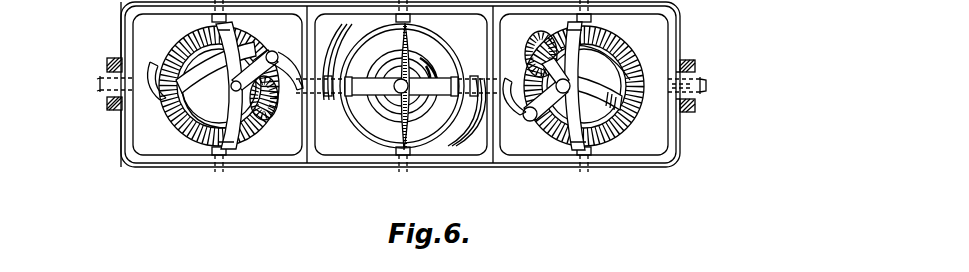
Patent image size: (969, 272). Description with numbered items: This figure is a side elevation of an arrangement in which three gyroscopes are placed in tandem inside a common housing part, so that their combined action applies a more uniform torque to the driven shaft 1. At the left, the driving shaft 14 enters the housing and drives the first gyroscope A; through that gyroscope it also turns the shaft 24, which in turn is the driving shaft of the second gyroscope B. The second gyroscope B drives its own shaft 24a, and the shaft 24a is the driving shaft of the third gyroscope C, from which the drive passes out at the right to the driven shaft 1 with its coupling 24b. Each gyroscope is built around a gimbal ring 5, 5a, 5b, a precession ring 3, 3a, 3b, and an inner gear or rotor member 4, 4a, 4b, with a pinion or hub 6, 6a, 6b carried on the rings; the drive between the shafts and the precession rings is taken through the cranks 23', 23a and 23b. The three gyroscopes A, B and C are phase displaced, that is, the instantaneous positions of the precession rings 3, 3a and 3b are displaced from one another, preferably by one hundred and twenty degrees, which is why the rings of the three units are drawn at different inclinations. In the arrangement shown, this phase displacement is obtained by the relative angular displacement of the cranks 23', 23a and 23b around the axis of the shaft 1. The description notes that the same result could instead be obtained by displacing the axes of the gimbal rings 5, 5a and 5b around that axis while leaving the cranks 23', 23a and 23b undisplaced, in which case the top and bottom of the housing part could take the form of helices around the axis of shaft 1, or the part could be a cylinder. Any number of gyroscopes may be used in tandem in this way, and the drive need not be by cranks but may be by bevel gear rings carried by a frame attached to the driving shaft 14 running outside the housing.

The driven shaft 1 is at (702, 83).
The precession ring 3 is at (216, 67).
The precession ring 3a is at (366, 80).
The precession ring 3b is at (598, 93).
The bevel gear (unit A) 4 is at (219, 86).
The bevel gear (unit B) 4a is at (384, 110).
The bevel gear (unit C) 4b is at (584, 86).
The gimbal ring 5 is at (229, 85).
The gimbal ring 5a is at (462, 50).
The gimbal ring 5b is at (570, 143).
The pinion (unit A) 6 is at (274, 121).
The pinion hub (unit B) 6a is at (394, 86).
The pinion (unit C) 6b is at (542, 46).
The driving shaft 14 is at (103, 77).
The crank 23' is at (154, 73).
The crank 23a is at (332, 94).
The crank 23b is at (512, 100).
The shaft 24 is at (305, 100).
The shaft 24a is at (494, 100).
The output coupling 24b is at (676, 102).
The first gyroscope A is at (217, 182).
The second gyroscope B is at (401, 182).
The third gyroscope C is at (585, 182).